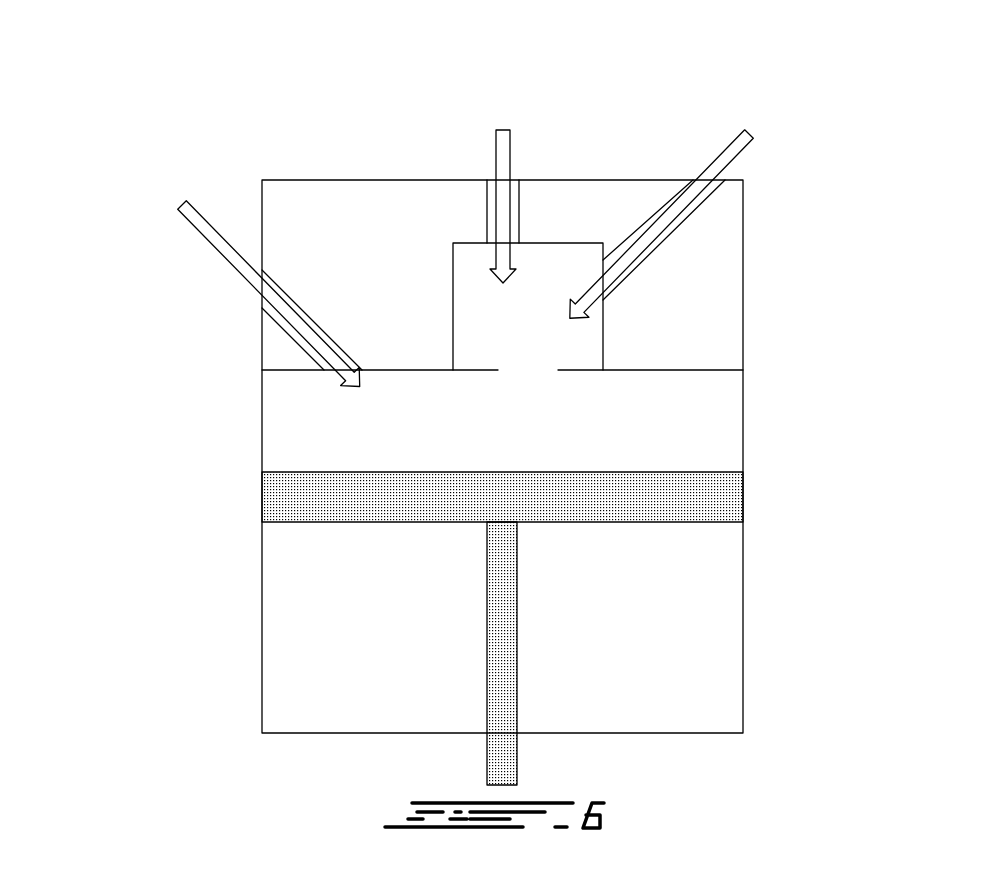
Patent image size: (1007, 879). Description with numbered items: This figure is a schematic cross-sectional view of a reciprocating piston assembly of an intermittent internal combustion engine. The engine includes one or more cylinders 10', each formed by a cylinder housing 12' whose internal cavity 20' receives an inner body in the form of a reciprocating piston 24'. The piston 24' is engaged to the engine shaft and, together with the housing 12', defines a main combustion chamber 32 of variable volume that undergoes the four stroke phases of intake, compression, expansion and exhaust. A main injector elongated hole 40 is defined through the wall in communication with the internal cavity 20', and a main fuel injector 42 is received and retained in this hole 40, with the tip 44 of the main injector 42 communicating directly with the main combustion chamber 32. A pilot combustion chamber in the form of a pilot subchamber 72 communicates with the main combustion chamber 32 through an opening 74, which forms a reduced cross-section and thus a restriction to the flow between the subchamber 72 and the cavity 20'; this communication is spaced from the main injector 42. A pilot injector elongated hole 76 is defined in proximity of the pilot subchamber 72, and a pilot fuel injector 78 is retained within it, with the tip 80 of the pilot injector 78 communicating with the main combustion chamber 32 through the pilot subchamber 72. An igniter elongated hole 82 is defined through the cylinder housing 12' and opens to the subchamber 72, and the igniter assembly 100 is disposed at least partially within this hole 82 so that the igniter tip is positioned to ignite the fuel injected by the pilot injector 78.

The cylinder 10' is at (903, 72).
The cylinder housing 12' is at (598, 442).
The internal cavity 20' is at (566, 399).
The reciprocating piston 24' is at (559, 628).
The main combustion chamber 32 is at (436, 435).
The main injector elongated hole 40 is at (290, 303).
The main fuel injector 42 is at (198, 232).
The tip of the main injector 44 is at (345, 380).
The pilot subchamber 72 is at (501, 320).
The opening 74 is at (527, 368).
The pilot injector elongated hole 76 is at (664, 206).
The pilot fuel injector 78 is at (727, 153).
The tip of the pilot injector 80 is at (585, 296).
The igniter elongated hole 82 is at (486, 202).
The igniter assembly 100 is at (495, 137).